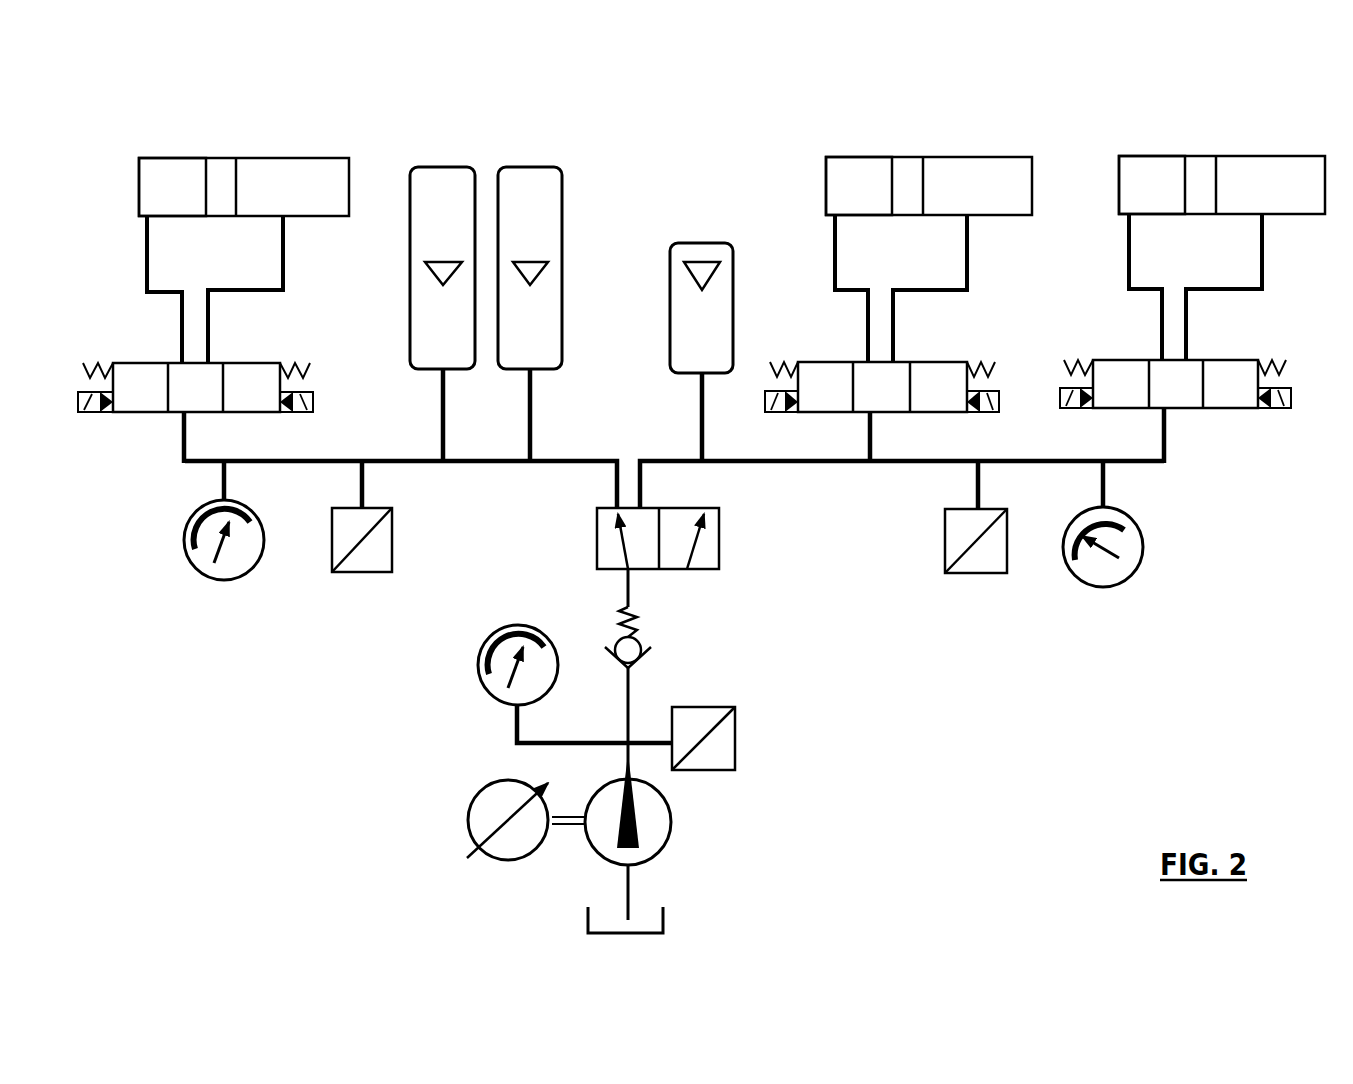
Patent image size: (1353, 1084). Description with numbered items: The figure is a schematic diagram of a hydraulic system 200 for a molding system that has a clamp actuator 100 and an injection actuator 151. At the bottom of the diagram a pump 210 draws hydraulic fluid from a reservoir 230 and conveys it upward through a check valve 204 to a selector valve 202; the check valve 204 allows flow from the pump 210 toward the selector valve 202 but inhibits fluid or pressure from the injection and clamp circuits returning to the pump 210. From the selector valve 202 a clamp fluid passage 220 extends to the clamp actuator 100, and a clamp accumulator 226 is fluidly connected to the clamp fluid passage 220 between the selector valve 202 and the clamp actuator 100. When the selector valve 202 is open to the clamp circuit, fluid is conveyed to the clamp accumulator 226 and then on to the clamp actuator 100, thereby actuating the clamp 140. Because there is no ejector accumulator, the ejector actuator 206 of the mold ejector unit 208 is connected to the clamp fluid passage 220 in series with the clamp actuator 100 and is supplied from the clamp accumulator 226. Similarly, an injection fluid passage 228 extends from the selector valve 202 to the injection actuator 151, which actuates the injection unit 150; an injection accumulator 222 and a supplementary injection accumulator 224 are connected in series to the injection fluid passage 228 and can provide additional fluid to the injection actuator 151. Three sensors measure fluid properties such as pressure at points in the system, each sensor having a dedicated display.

The clamp actuator 100 is at (859, 152).
The clamp 140 is at (962, 152).
The injection unit 150 is at (281, 154).
The injection actuator 151 is at (179, 154).
The hydraulic system 200 is at (700, 497).
The selector valve 202 is at (722, 538).
The check valve 204 is at (645, 638).
The ejector actuator 206 is at (1165, 142).
The mold ejector unit 208 is at (1256, 142).
The pump 210 is at (673, 838).
The clamp fluid passage 220 is at (1166, 452).
The injection accumulator 222 is at (443, 167).
The supplementary injection accumulator 224 is at (558, 167).
The clamp accumulator 226 is at (703, 242).
The injection fluid passage 228 is at (180, 452).
The reservoir 230 is at (683, 920).